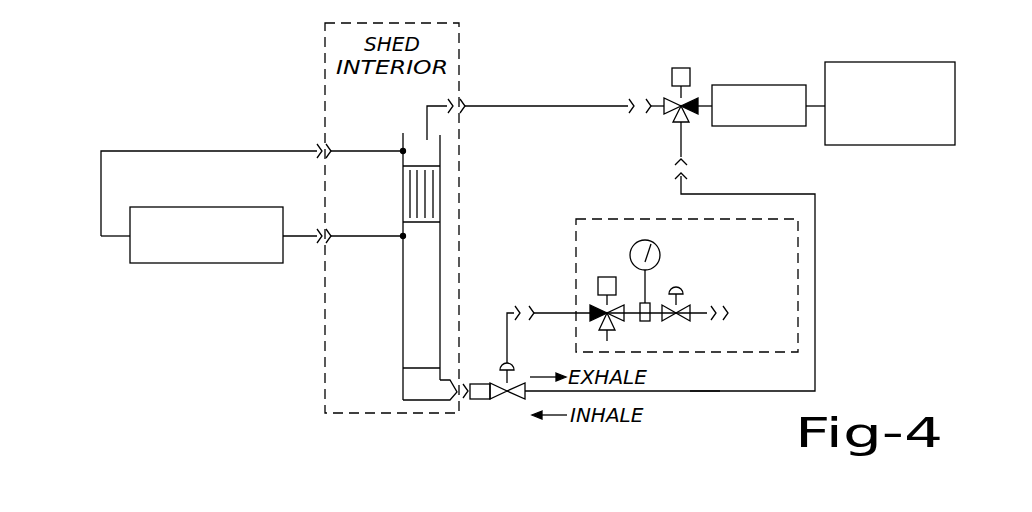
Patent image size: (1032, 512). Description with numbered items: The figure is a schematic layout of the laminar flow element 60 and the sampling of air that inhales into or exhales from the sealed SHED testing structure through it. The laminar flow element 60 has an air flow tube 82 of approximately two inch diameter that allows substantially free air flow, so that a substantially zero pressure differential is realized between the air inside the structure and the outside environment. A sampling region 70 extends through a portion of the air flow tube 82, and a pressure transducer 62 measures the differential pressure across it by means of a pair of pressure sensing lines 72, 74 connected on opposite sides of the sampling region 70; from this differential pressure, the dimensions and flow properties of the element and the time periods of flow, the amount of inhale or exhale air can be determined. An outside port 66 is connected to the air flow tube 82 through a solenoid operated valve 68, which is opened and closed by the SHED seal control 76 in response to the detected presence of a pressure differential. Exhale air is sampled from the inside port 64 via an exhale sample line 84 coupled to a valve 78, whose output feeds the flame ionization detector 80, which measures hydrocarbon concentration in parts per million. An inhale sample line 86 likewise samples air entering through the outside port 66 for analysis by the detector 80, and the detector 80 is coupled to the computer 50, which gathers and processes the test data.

The computer 50 is at (888, 62).
The laminar flow element 60 is at (455, 203).
The pressure transducer 62 is at (208, 264).
The inside port 64 is at (430, 153).
The outside port 66 is at (525, 396).
The solenoid operated valve 68 is at (500, 387).
The sampling region 70 is at (403, 202).
The pressure sensing line 72 is at (353, 150).
The pressure sensing line 74 is at (378, 238).
The SHED seal control 76 is at (648, 219).
The valve 78 is at (681, 66).
The flame ionization detector 80 is at (750, 85).
The air flow tube 82 is at (403, 320).
The exhale sample line 84 is at (555, 106).
The inhale sample line 86 is at (700, 391).